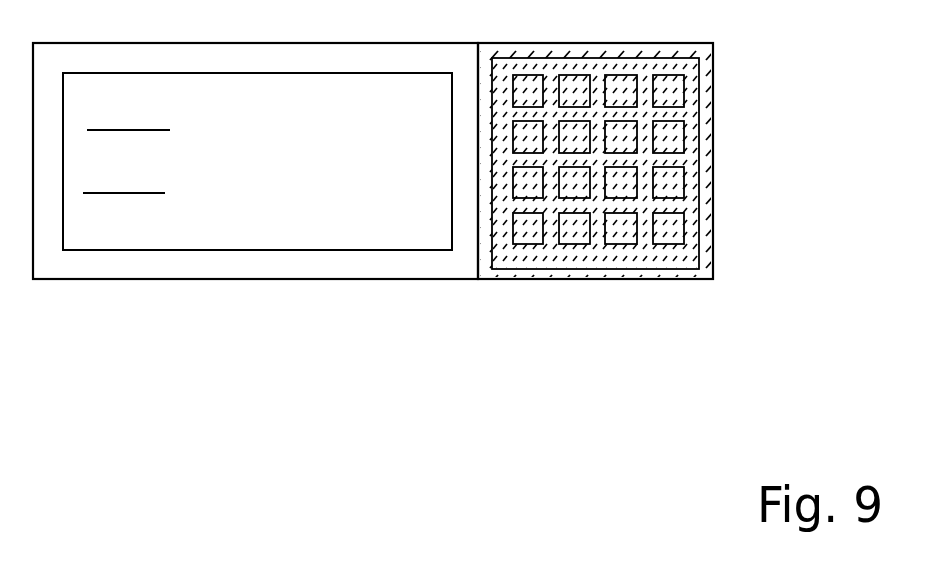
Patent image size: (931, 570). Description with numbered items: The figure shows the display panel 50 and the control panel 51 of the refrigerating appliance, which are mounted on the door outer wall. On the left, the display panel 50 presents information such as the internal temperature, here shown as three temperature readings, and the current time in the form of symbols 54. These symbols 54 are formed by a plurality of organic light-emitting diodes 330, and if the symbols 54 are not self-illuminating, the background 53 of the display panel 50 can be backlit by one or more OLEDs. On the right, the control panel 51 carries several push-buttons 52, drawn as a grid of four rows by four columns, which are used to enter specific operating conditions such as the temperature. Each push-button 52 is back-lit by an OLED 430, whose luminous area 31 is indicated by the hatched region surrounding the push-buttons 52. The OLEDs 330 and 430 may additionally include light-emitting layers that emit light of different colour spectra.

The display panel 50 is at (398, 226).
The background 53 is at (288, 222).
The symbols 54 is at (243, 244).
The organic light-emitting diodes 330 is at (270, 186).
The OLED 430 is at (663, 228).
The luminous area 31 is at (672, 233).
The control panel 51 is at (625, 258).
The push-buttons 52 is at (668, 228).